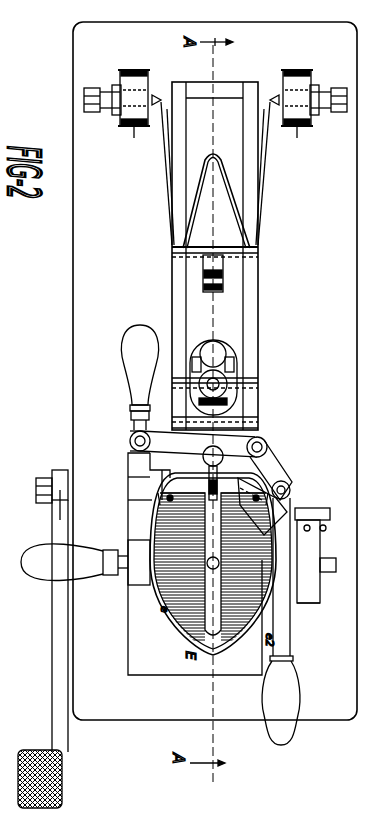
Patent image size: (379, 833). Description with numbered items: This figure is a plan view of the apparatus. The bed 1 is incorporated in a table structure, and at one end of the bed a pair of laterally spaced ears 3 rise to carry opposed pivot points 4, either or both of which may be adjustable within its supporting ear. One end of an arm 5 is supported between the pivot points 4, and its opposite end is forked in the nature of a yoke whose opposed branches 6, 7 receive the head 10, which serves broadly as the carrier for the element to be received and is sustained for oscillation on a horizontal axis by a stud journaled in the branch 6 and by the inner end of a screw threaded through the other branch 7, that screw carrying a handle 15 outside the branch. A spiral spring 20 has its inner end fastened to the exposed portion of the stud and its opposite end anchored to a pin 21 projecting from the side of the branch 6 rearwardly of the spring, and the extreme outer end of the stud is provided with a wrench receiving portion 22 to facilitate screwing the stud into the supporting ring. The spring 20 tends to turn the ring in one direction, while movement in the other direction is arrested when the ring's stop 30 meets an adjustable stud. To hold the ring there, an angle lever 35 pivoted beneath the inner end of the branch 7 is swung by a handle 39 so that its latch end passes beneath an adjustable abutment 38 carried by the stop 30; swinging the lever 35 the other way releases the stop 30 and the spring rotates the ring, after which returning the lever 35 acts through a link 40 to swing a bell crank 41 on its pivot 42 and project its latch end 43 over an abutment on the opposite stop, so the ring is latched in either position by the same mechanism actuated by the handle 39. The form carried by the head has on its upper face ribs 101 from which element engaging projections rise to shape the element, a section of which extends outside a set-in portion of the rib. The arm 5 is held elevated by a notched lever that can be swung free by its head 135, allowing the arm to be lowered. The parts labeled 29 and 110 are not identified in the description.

The bed 1 is at (73, 358).
The ears 3 is at (215, 112).
The pivot points 4 is at (158, 112).
The arm 5 is at (253, 307).
The branch 6 is at (293, 620).
The branch 7 is at (137, 530).
The head 10 is at (185, 612).
The handle 15 is at (78, 563).
The spiral spring 20 is at (322, 600).
The pin 21 is at (318, 508).
The wrench receiving portion 22 is at (336, 573).
The shoe lug 29 is at (165, 596).
The stop 30 is at (163, 608).
The angle lever 35 is at (132, 463).
The adjustable abutment 38 is at (162, 625).
The handle 39 is at (137, 384).
The link 40 is at (140, 470).
The bell crank 41 is at (279, 455).
The pivot 42 is at (291, 490).
The latch end 43 is at (270, 525).
The ribs 101 is at (232, 630).
The pin 110 is at (204, 456).
The head 135 is at (204, 352).